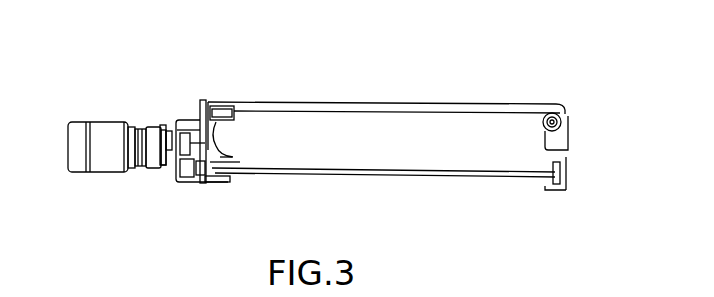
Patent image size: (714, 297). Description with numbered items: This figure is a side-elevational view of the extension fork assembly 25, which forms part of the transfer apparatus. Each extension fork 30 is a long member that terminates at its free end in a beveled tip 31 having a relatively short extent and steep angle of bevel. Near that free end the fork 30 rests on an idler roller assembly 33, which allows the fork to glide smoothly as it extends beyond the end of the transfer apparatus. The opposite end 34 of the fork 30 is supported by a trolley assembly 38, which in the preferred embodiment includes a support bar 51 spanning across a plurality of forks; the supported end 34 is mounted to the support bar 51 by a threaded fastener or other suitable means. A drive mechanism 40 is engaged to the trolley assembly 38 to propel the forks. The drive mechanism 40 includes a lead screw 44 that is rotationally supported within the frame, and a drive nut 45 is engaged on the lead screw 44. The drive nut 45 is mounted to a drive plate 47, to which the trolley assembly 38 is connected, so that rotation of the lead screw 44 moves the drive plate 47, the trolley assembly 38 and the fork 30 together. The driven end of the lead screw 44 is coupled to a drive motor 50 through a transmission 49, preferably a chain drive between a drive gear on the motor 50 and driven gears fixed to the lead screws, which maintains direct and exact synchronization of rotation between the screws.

The extension fork assembly 25 is at (426, 141).
The extension fork 30 is at (412, 108).
The beveled tip 31 is at (566, 112).
The idler roller assembly 33 is at (574, 117).
The opposite end 34 is at (215, 98).
The trolley assembly 38 is at (238, 114).
The drive mechanism 40 is at (133, 180).
The lead screw 44 is at (500, 175).
The drive nut 45 is at (210, 183).
The drive plate 47 is at (233, 157).
The transmission 49 is at (180, 113).
The drive motor 50 is at (80, 138).
The support bar 51 is at (212, 100).